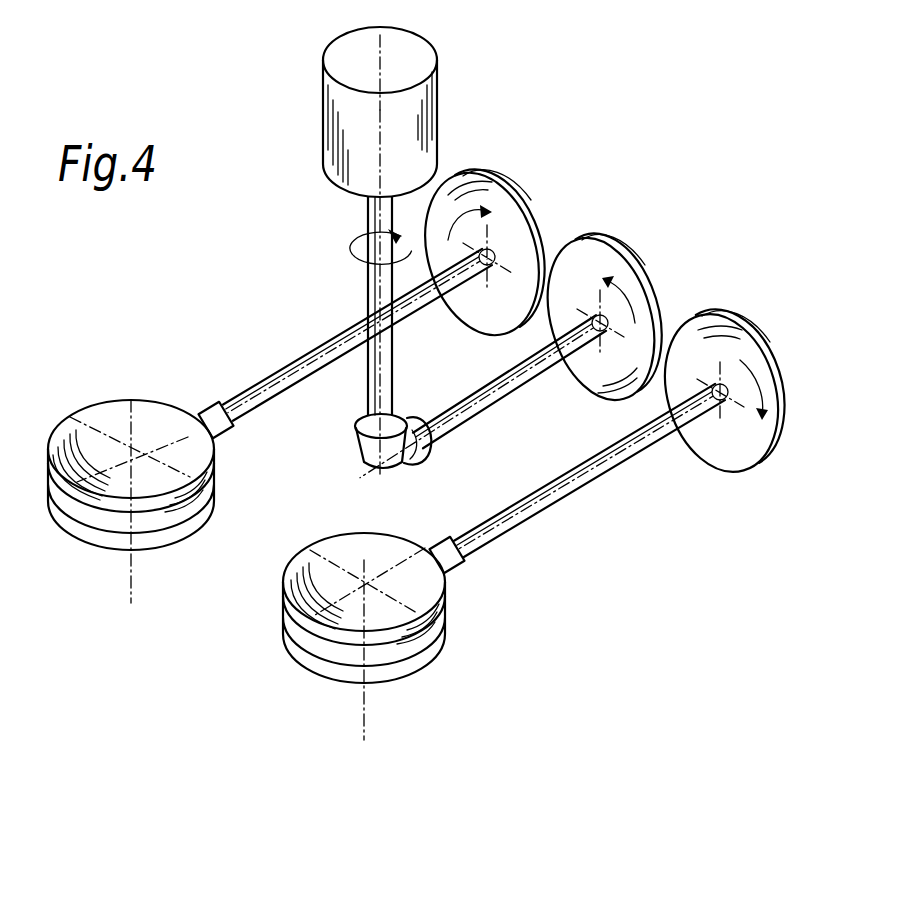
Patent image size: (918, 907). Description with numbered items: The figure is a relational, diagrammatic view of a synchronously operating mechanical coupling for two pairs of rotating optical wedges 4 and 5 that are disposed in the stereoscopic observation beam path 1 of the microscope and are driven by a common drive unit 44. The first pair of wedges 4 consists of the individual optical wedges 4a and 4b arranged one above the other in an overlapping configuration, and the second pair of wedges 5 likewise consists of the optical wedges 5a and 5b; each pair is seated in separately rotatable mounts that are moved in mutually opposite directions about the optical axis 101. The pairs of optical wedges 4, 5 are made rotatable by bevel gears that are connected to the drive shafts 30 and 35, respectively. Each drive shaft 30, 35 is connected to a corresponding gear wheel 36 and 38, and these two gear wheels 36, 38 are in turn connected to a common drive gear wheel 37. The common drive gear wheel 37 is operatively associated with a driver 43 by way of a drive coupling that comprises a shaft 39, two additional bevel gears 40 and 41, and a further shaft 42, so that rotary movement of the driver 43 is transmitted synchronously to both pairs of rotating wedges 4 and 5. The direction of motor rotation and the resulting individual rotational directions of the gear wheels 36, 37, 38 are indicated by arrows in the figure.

The stereoscopic observation beam path 1 is at (357, 718).
The pair of rotating wedges 4 is at (455, 607).
The optical wedge 4a is at (430, 655).
The optical wedge 4b is at (327, 550).
The pair of rotating wedges 5 is at (82, 396).
The optical wedge 5a is at (105, 545).
The optical wedge 5b is at (133, 412).
The rotary drive shaft 30 is at (645, 447).
The drive shaft 35 is at (257, 397).
The gear wheel 36 is at (743, 333).
The common drive gear wheel 37 is at (630, 270).
The gear wheel 38 is at (517, 208).
The shaft 39 is at (527, 387).
The bevel gear 40 is at (418, 455).
The bevel gear 41 is at (365, 452).
The shaft 42 is at (372, 288).
The driver 43 is at (421, 101).
The common drive unit 44 is at (249, 287).
The optical axis 101 is at (137, 585).